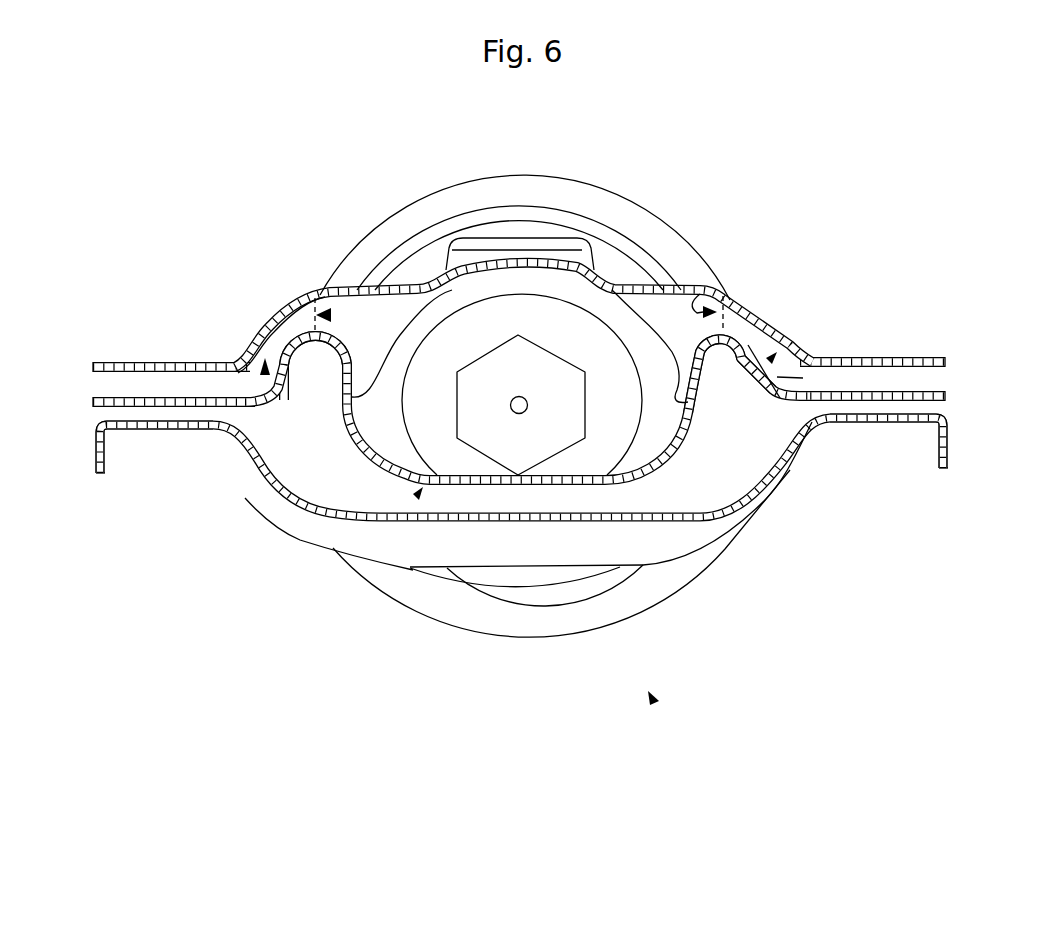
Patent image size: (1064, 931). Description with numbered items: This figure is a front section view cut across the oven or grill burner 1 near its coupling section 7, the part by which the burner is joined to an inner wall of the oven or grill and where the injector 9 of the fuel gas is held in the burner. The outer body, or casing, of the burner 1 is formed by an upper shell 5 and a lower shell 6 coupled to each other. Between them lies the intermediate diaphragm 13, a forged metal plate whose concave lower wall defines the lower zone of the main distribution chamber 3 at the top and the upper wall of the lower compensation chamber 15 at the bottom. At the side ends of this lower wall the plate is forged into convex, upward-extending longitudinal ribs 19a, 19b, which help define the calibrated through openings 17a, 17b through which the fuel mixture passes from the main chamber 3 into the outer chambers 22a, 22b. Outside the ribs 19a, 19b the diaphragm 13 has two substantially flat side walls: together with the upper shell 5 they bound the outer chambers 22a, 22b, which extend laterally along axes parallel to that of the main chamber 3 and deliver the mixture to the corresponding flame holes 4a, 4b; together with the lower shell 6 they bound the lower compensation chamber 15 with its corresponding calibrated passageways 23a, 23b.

The oven or grill burner 1 is at (652, 698).
The main distribution chamber 3 is at (470, 338).
The flame hole 4a is at (920, 377).
The flame hole 4b is at (140, 388).
The upper shell 5 is at (530, 262).
The lower shell 6 is at (515, 516).
The coupling section 7 is at (605, 208).
The injector 9 is at (545, 443).
The intermediate diaphragm 13 is at (645, 470).
The lower compensation chamber 15 is at (413, 498).
The through opening 17a is at (723, 298).
The through opening 17b is at (340, 293).
The longitudinal rib 19a is at (729, 324).
The longitudinal rib 19b is at (297, 337).
The outer chamber 22a is at (765, 366).
The outer chamber 22b is at (266, 370).
The calibrated passageway 23a is at (917, 405).
The calibrated passageway 23b is at (193, 412).